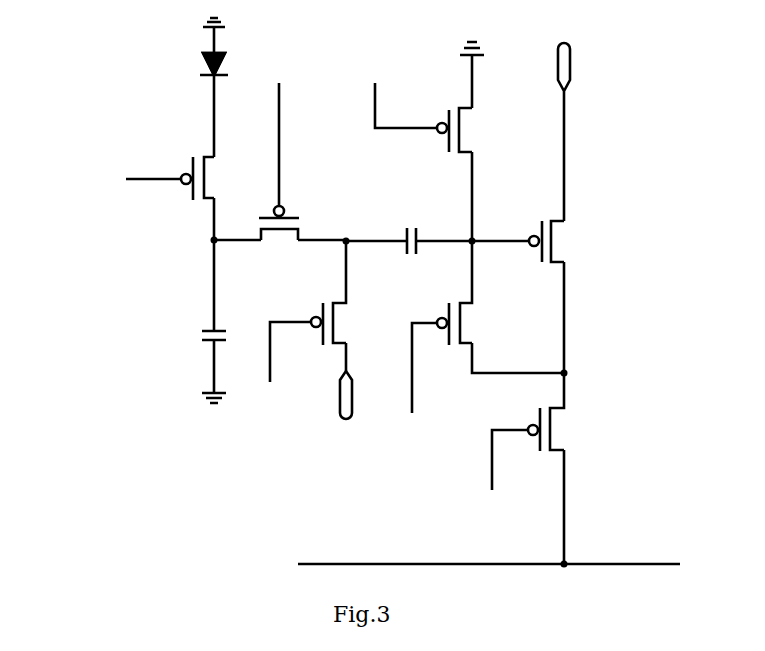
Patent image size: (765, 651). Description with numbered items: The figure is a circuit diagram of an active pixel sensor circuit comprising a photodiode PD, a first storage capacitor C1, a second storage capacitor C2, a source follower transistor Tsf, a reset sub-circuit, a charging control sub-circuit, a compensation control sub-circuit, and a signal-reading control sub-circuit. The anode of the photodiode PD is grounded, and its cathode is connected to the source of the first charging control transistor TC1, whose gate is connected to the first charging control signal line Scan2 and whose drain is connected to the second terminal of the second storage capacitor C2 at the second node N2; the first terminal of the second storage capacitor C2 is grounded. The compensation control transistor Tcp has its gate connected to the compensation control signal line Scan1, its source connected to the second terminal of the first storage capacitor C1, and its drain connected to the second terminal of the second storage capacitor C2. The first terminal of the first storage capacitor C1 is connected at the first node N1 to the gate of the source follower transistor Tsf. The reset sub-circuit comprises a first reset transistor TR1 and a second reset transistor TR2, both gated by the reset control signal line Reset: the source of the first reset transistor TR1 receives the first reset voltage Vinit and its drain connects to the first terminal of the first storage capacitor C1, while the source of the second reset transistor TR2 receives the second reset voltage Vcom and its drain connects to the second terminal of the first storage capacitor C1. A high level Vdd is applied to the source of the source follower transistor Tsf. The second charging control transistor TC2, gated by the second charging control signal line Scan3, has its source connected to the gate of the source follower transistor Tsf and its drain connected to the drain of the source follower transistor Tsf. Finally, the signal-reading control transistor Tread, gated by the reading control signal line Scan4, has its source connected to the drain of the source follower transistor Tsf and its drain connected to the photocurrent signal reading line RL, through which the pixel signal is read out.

The photodiode PD is at (196, 87).
The first charging control transistor TC1 is at (228, 198).
The first charging control signal line Scan2 is at (125, 181).
The second node N2 is at (221, 241).
The second storage capacitor C2 is at (200, 321).
The compensation control transistor Tcp is at (302, 244).
The compensation control signal line Scan1 is at (273, 136).
The first storage capacitor C1 is at (409, 230).
The first node N1 is at (499, 232).
The first reset voltage Vinit is at (478, 58).
The first reset transistor TR1 is at (480, 174).
The reset control signal line Reset is at (340, 227).
The high level Vdd is at (562, 118).
The source follower transistor Tsf is at (570, 297).
The second charging control transistor TC2 is at (502, 309).
The second charging control signal line Scan3 is at (424, 383).
The second reset transistor TR2 is at (355, 306).
The second reset voltage Vcom is at (339, 407).
The signal-reading control transistor Tread is at (580, 468).
The reading control signal line Scan4 is at (495, 473).
The photocurrent signal reading line RL is at (467, 560).